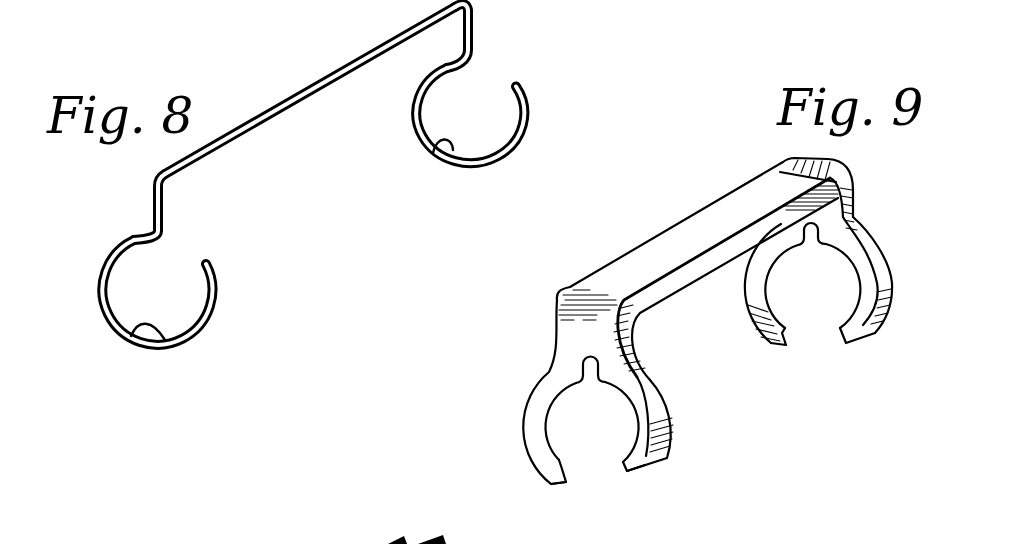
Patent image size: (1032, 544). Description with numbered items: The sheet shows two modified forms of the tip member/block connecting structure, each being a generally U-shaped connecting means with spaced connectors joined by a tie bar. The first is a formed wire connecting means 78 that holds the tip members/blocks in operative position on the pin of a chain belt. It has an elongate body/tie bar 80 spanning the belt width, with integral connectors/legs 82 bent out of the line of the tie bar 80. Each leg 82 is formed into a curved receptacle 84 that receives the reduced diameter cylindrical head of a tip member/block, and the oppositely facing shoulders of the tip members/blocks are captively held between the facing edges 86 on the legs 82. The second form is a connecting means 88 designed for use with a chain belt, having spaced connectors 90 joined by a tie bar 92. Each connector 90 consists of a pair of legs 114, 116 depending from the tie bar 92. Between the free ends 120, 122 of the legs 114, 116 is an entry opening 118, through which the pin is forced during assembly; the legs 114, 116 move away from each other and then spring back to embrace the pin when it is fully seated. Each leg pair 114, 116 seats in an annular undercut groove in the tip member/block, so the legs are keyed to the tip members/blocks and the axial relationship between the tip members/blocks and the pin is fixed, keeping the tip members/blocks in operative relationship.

In FIG. 8, the formed wire connecting means 78 is at (305, 190).
In FIG. 8, the elongate body/tie bar 80 is at (277, 107).
In FIG. 8, the connectors/legs 82 is at (153, 205).
In FIG. 8, the curved receptacle 84 is at (167, 342).
In FIG. 8, the facing edges 86 is at (212, 307).
In FIG. 9, the connecting means 88 is at (687, 331).
In FIG. 9, the connectors 90 is at (633, 383).
In FIG. 9, the tie bar 92 is at (673, 243).
In FIG. 9, the leg 114 is at (530, 433).
In FIG. 9, the leg 116 is at (652, 455).
In FIG. 9, the entry opening 118 is at (588, 457).
In FIG. 9, the free end 120 is at (564, 482).
In FIG. 9, the free end 122 is at (628, 477).